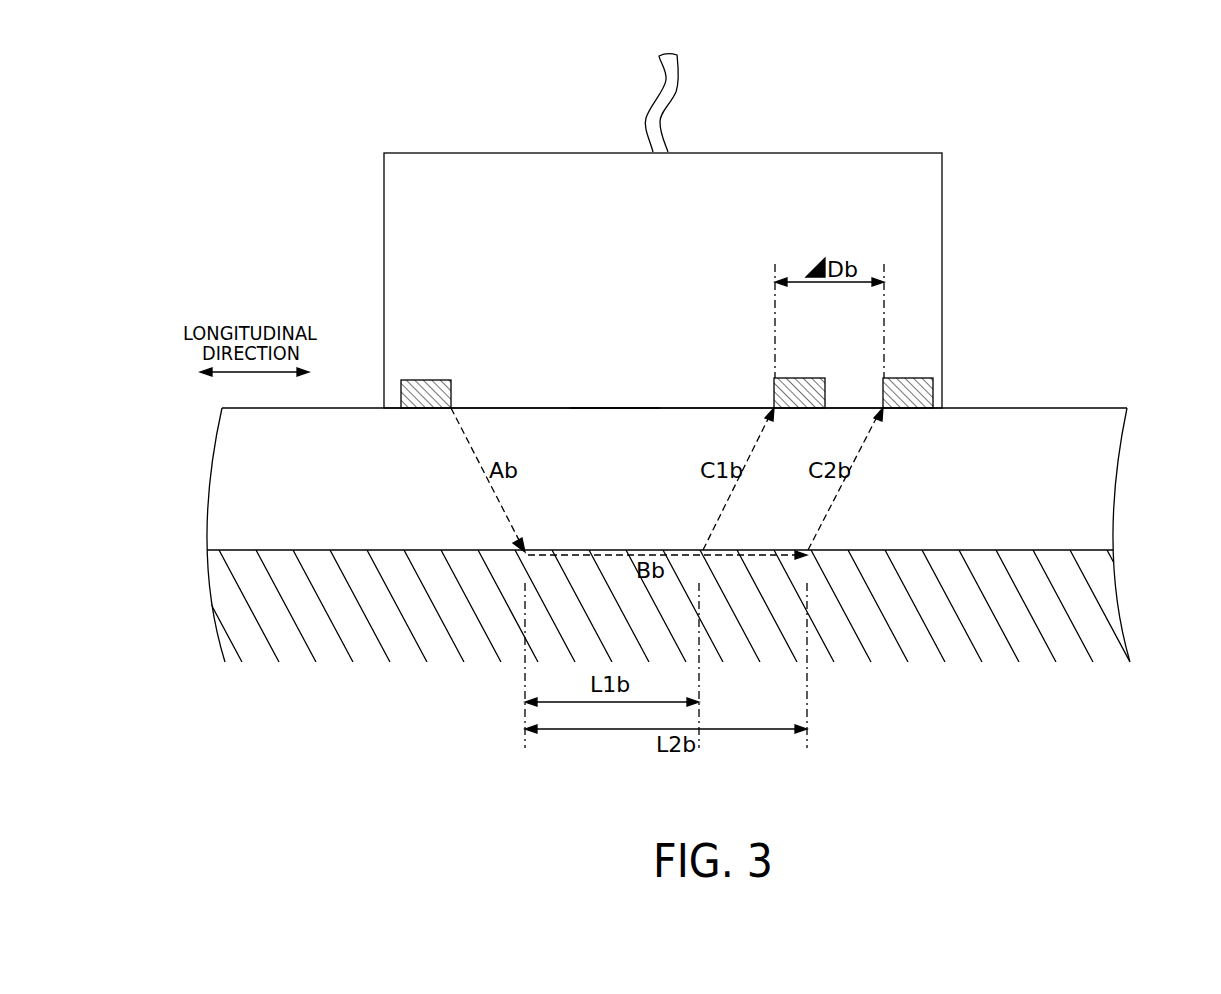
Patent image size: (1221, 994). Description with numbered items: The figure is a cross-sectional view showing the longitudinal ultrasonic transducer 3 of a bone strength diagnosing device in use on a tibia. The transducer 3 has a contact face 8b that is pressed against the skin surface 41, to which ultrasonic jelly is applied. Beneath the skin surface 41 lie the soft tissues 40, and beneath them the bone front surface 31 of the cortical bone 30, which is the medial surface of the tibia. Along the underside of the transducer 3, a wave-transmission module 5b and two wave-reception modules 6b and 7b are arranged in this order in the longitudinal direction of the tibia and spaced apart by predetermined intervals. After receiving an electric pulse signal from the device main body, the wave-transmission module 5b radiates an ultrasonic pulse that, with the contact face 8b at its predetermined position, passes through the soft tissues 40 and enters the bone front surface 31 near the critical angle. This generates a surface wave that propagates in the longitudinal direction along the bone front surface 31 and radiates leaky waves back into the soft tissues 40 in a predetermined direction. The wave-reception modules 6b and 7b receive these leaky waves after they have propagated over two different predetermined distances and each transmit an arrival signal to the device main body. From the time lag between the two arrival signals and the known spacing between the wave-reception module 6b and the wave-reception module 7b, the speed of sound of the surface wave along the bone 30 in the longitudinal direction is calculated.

The longitudinal ultrasonic transducer 3 is at (923, 182).
The wave-transmission module 5b is at (414, 379).
The wave-reception module 6b is at (780, 392).
The wave-reception module 7b is at (905, 388).
The contact face 8b is at (597, 412).
The skin surface 41 is at (979, 407).
The soft tissues 40 is at (1045, 455).
The bone front surface 31 is at (973, 548).
The bone 30 is at (1047, 625).